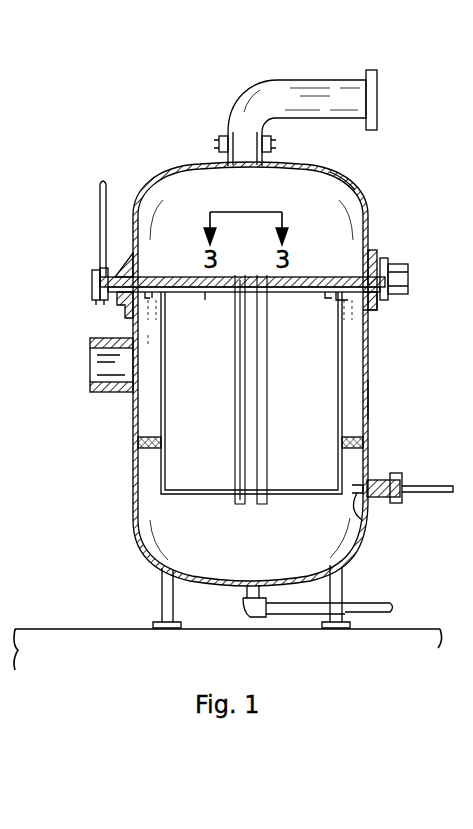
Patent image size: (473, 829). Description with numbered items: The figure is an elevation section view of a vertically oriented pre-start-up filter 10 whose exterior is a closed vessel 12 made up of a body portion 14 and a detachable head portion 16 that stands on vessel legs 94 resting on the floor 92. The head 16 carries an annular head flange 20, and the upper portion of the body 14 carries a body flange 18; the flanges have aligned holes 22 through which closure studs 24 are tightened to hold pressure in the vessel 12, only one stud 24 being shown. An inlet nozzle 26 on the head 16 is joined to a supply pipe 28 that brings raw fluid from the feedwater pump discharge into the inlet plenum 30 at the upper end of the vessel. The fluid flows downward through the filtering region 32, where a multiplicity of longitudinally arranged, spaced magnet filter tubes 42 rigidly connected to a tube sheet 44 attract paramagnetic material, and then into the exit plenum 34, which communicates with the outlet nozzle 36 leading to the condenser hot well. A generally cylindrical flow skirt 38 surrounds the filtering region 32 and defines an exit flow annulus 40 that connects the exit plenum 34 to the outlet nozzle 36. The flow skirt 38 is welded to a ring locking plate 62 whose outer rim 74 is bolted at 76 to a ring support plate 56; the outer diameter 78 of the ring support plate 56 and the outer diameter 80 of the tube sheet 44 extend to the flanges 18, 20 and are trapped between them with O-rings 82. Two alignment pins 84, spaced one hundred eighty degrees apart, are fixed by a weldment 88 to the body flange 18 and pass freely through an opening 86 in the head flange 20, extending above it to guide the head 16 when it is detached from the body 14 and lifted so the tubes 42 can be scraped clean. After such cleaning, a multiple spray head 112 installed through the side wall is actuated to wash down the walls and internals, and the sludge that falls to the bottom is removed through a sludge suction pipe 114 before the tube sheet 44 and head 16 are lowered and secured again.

The filter 10 is at (112, 122).
The vessel 12 is at (378, 362).
The body portion 14 is at (369, 400).
The head portion 16 is at (351, 186).
The body flange 18 is at (375, 307).
The head flange 20 is at (372, 250).
The holes 22 is at (405, 292).
The closure stud 24 is at (397, 264).
The inlet nozzle 26 is at (271, 160).
The supply pipe 28 is at (255, 90).
The inlet plenum 30 is at (262, 198).
The filtering region 32 is at (226, 436).
The exit plenum 34 is at (267, 556).
The outlet nozzle 36 is at (105, 392).
The flow skirt 38 is at (138, 402).
The exit flow annulus 40 is at (140, 443).
The magnet filter tube 42 is at (235, 391).
The tube sheet 44 is at (330, 277).
The ring support plate 56 is at (182, 277).
The ring locking plate 62 is at (212, 294).
The outer rim 74 is at (159, 298).
The bolting location 76 is at (334, 312).
The outer diameter of ring support plate 78 is at (92, 288).
The outer diameter of tube sheet 80 is at (92, 282).
The O-ring 82 is at (96, 298).
The alignment pin 84 is at (107, 185).
The opening 86 is at (116, 262).
The weldment 88 is at (120, 308).
The floor 92 is at (92, 629).
The vessel leg 94 is at (175, 592).
The multiple spray head 112 is at (370, 508).
The sludge suction pipe 114 is at (366, 603).